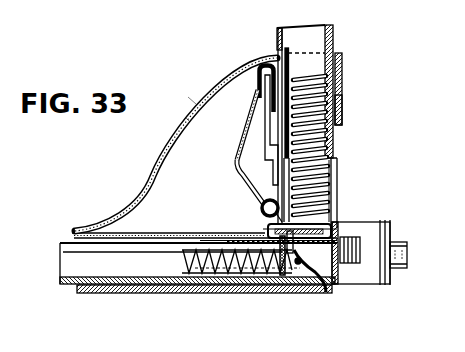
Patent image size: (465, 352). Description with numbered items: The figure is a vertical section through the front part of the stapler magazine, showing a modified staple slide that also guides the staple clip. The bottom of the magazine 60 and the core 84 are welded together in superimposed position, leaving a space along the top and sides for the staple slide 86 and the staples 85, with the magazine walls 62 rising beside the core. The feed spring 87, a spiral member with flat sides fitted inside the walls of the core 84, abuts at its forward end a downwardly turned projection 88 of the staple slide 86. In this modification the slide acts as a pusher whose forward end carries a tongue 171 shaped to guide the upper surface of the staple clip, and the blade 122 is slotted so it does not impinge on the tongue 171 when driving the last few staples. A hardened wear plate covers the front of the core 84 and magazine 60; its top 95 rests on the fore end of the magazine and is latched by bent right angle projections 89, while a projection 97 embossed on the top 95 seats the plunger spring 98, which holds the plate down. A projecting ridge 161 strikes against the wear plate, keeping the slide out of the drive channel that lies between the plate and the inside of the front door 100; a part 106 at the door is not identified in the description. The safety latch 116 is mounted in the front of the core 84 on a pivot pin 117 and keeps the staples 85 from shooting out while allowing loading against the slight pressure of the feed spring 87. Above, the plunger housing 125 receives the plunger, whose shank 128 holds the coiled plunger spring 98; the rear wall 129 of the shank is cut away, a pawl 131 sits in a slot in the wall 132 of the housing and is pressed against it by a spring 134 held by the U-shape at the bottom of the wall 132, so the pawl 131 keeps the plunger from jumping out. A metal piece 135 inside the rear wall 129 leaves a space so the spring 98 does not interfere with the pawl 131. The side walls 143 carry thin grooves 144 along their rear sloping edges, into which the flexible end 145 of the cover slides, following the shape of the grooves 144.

The magazine 60 is at (106, 287).
The magazine walls 62 is at (137, 233).
The core 84 is at (136, 286).
The staples 85 is at (362, 240).
The staple slide 86 is at (243, 238).
The feed spring 87 is at (176, 287).
The downwardly turned projection 88 is at (260, 230).
The bent right angle projections 89 is at (272, 225).
The top of the wear plate 95 is at (263, 204).
The projection 97 is at (328, 203).
The plunger spring 98 is at (305, 82).
The front door 100 is at (392, 278).
The knob 106 is at (407, 256).
The safety latch 116 is at (317, 286).
The pivot pin 117 is at (285, 286).
The blade 122 is at (343, 103).
The plunger housing 125 is at (342, 83).
The plunger shank 128 is at (326, 25).
The rear wall of the plunger shank 129 is at (279, 45).
The pawl 131 is at (262, 98).
The wall of the plunger housing 132 is at (278, 172).
The spring 134 is at (256, 108).
The metal piece 135 is at (294, 62).
The side walls 143 is at (183, 152).
The thin grooves 144 is at (196, 103).
The flexible end 145 is at (187, 120).
The projecting ridge 161 is at (340, 222).
The tongue 171 is at (340, 232).